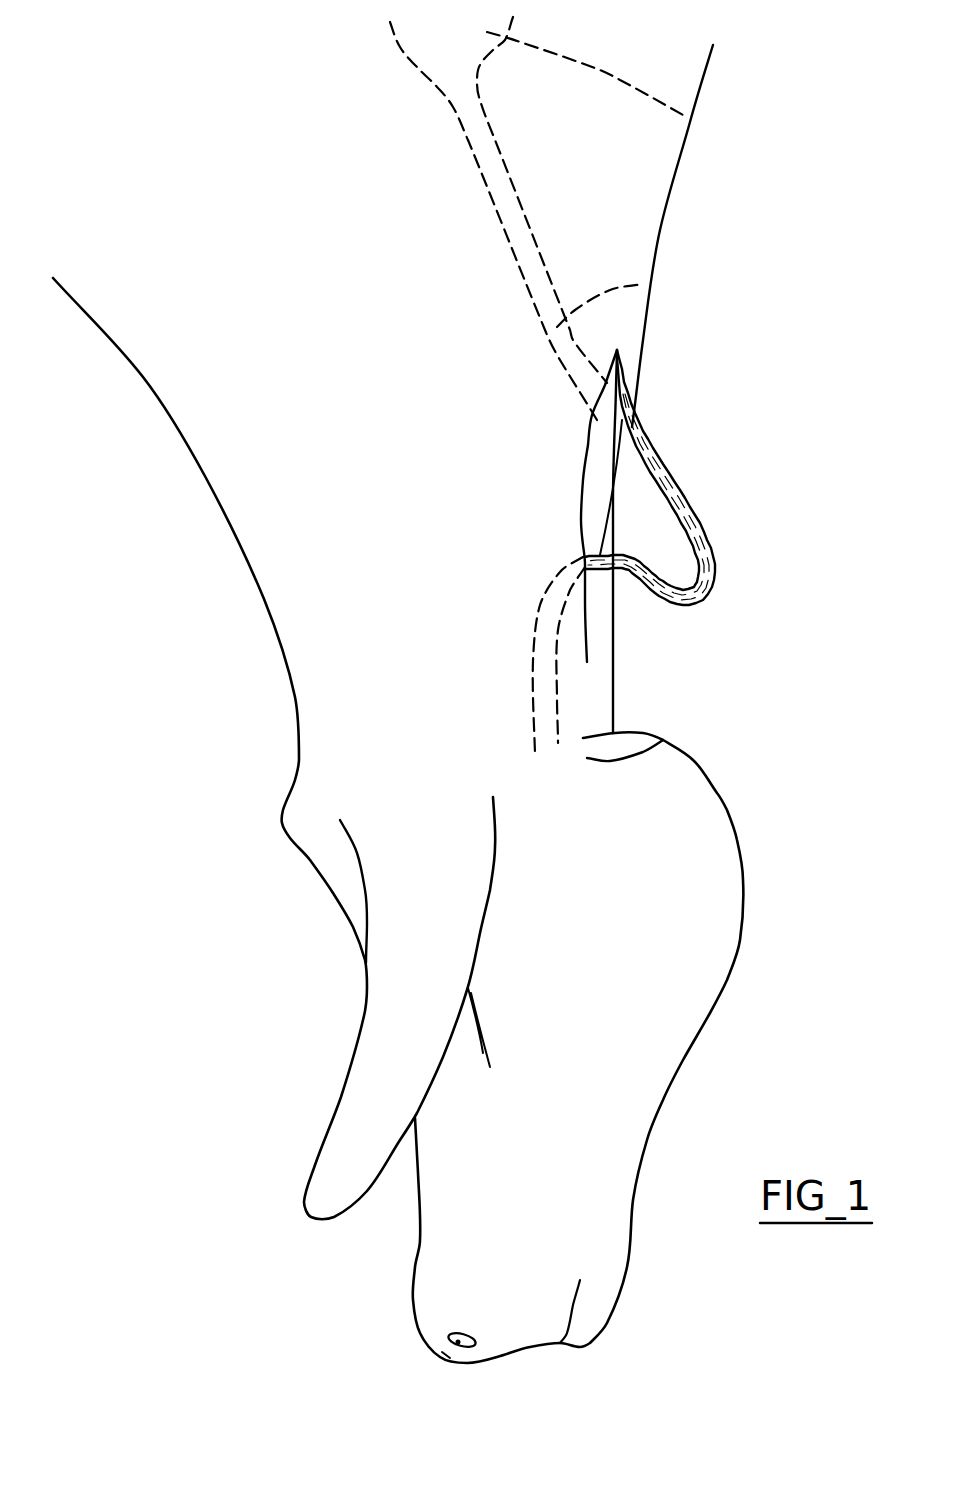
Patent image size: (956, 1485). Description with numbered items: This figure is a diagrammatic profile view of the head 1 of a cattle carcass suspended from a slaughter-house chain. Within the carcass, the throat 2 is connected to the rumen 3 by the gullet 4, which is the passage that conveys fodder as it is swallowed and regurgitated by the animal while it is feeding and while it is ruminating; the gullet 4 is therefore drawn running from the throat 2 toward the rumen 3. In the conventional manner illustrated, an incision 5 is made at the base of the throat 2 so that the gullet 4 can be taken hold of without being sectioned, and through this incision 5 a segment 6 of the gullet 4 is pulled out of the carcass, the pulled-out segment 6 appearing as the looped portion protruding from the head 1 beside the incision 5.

The head 1 is at (663, 987).
The throat 2 is at (663, 740).
The rumen 3 is at (690, 122).
The gullet 4 is at (643, 284).
The incision 5 is at (590, 593).
The segment 6 is at (673, 500).